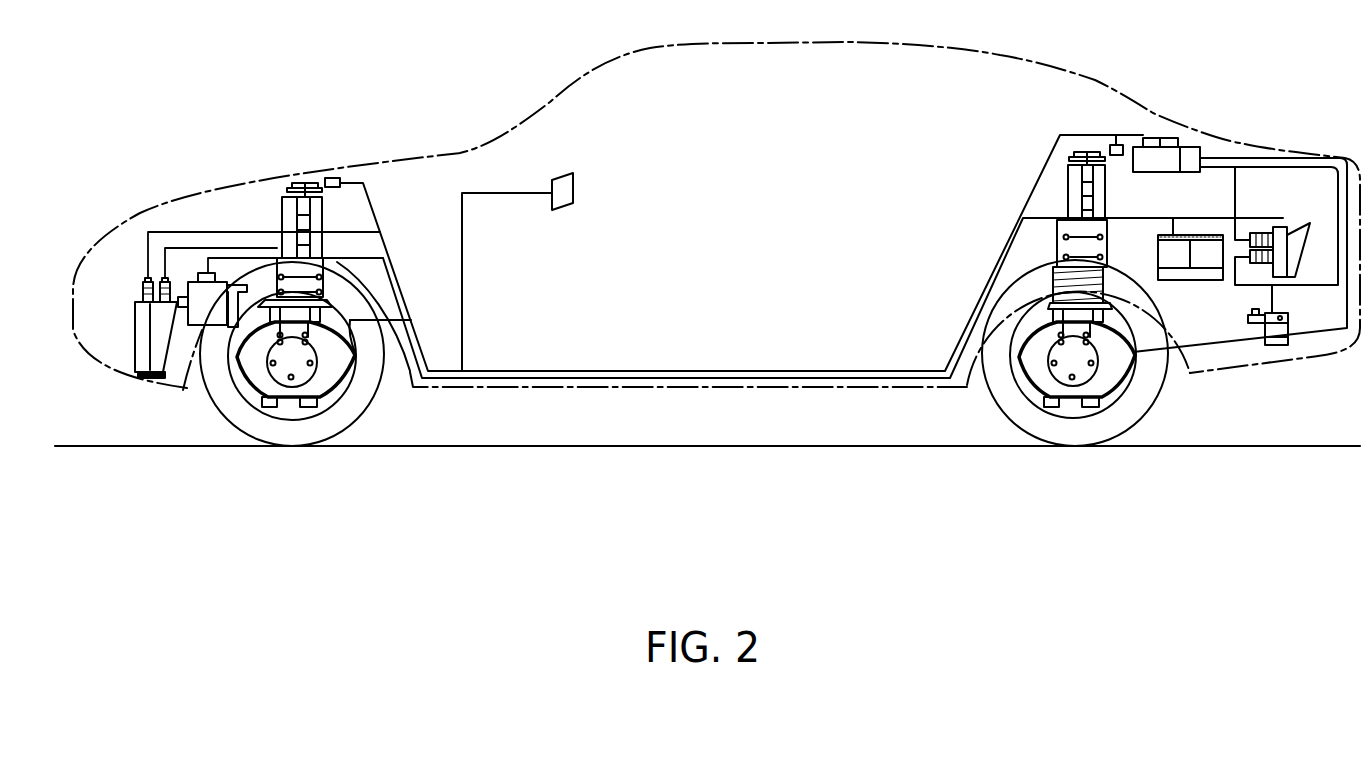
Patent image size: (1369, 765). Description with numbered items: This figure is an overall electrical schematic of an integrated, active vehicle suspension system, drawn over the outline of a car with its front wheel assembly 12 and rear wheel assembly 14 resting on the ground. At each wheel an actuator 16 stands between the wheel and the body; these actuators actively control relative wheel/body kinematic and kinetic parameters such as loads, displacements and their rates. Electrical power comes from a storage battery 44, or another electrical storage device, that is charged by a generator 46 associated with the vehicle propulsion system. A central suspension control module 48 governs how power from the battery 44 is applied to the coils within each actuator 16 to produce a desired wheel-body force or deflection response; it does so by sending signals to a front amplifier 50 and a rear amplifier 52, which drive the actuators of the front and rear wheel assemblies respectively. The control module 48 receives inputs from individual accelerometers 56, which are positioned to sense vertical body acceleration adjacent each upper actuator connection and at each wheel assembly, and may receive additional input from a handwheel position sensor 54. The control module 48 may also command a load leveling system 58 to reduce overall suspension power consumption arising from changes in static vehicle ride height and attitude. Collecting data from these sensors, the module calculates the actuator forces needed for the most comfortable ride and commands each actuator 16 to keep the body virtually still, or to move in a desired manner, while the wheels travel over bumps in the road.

The front wheel assembly 12 is at (284, 494).
The rear wheel assembly 14 is at (1037, 494).
The actuator 16 is at (282, 200).
The storage battery 44 is at (1197, 283).
The generator 46 is at (226, 328).
The central suspension control module 48 is at (1153, 160).
The front amplifier 50 is at (135, 355).
The rear amplifier 52 is at (1295, 225).
The handwheel position sensor 54 is at (573, 186).
The accelerometer 56 is at (333, 177).
The load leveling system 58 is at (1280, 346).